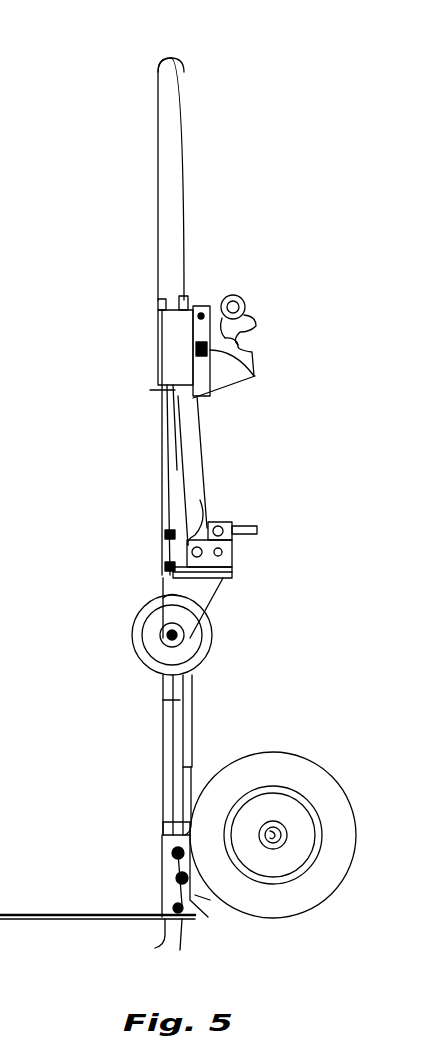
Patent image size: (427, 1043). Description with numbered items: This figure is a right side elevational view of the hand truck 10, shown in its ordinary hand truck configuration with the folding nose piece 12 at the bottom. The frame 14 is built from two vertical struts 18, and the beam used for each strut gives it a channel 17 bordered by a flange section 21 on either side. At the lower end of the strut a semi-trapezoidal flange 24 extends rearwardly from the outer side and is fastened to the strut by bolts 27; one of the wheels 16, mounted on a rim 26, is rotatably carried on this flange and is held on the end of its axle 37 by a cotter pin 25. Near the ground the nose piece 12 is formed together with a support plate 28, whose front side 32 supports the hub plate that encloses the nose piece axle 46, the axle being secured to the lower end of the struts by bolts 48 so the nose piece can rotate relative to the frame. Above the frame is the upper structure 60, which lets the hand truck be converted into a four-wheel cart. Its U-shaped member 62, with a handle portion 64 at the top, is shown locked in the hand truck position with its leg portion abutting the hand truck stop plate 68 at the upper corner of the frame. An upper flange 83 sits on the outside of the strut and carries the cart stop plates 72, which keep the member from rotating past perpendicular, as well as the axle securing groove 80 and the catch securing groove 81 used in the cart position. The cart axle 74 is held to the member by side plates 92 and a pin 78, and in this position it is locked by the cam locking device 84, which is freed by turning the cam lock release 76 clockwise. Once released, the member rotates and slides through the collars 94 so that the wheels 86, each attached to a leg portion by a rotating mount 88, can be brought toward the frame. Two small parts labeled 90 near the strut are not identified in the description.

The hand truck 10 is at (128, 489).
The folding nose piece 12 is at (75, 912).
The frame 14 is at (198, 723).
The wheels 16 is at (305, 900).
The channel 17 is at (165, 698).
The vertical struts 18 is at (178, 730).
The flange section 21 is at (195, 767).
The flange 24 is at (196, 896).
The cotter pin 25 is at (288, 843).
The rim 26 is at (280, 792).
The bolts 27 is at (163, 817).
The support plate 28 is at (172, 890).
The front side 32 is at (165, 875).
The axle 37 is at (288, 826).
The nose piece axle 46 is at (172, 850).
The bolts 48 is at (160, 946).
The upper structure 60 is at (212, 458).
The U-shaped member 62 is at (185, 68).
The handle portion 64 is at (172, 59).
The hand truck stop plate 68 is at (162, 388).
The cart stop plates 72 is at (252, 380).
The cart axle 74 is at (232, 560).
The cam lock release 76 is at (257, 530).
The pin 78 is at (223, 552).
The axle securing groove 80 is at (246, 332).
The catch securing groove 81 is at (256, 350).
The upper flange 83 is at (215, 300).
The cam locking device 84 is at (232, 575).
The wheels 86 is at (210, 650).
The rotating mount 88 is at (222, 604).
The pin 90 is at (168, 536).
The side plates 92 is at (200, 500).
The collars 94 is at (168, 330).